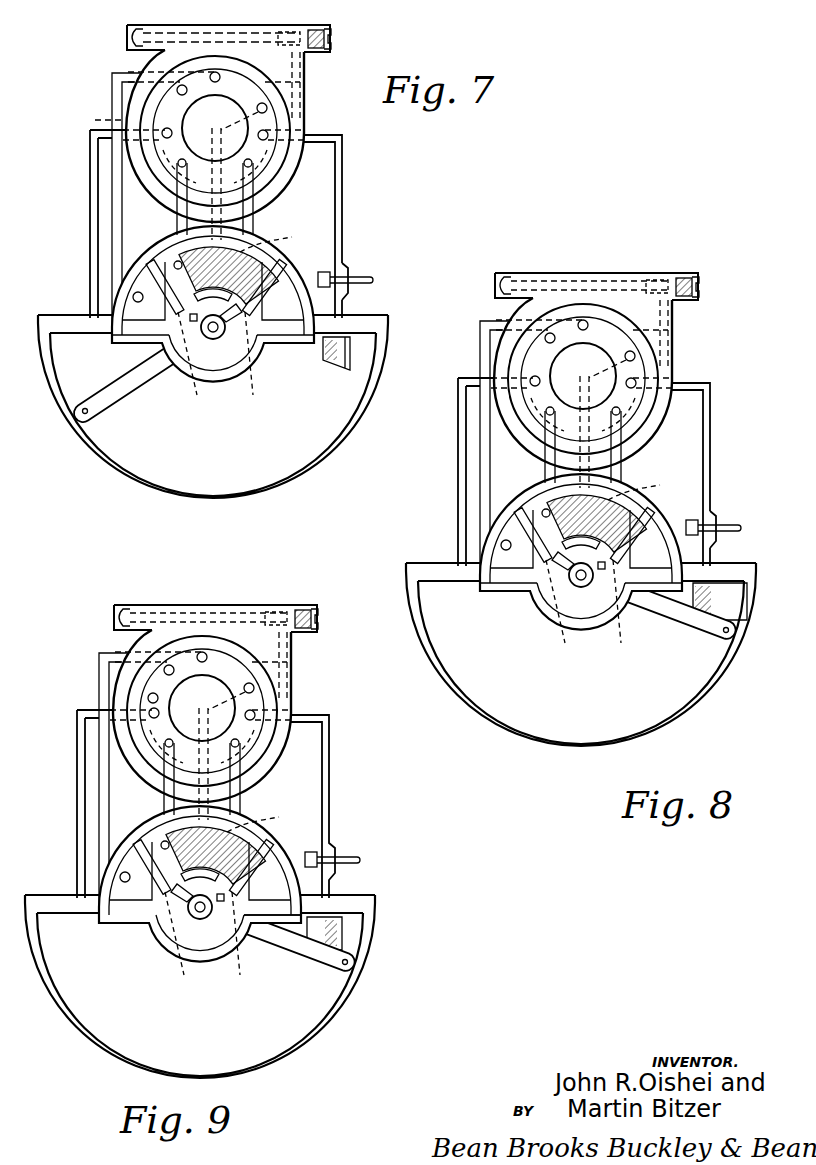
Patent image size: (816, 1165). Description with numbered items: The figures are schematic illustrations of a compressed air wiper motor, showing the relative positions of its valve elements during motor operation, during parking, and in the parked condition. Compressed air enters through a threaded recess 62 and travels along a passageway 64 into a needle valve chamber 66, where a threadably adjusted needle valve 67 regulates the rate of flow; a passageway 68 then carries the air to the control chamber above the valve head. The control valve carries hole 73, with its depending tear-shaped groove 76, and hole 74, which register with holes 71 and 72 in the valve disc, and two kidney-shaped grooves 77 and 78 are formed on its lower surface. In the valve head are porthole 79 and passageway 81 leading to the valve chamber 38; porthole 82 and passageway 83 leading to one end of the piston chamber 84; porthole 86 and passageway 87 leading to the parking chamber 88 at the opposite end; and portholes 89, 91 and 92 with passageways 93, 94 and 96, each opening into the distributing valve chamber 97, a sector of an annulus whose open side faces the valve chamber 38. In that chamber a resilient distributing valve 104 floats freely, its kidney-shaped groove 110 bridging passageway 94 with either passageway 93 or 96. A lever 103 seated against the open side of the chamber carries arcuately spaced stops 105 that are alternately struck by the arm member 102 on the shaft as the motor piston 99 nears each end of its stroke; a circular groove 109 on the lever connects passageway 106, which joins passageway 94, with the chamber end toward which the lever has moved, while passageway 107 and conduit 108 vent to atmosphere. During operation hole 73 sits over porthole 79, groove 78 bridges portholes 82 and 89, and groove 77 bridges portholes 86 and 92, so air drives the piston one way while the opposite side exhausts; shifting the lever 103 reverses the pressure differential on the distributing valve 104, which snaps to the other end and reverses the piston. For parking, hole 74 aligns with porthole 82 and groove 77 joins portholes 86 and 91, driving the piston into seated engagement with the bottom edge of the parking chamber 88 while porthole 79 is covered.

In FIG. 7, the valve chamber 38 is at (130, 308).
In FIG. 8, the valve chamber 38 is at (543, 552).
In FIG. 9, the valve chamber 38 is at (162, 884).
In FIG. 7, the threaded recess 62 is at (130, 40).
In FIG. 8, the threaded recess 62 is at (481, 275).
In FIG. 9, the threaded recess 62 is at (94, 605).
In FIG. 7, the passageway 64 is at (155, 26).
In FIG. 7, the needle valve chamber 66 is at (306, 52).
In FIG. 7, the needle valve 67 is at (333, 46).
In FIG. 7, the passageway 68 is at (304, 88).
In FIG. 8, the passageway 68 is at (699, 334).
In FIG. 7, the hole 71 is at (332, 38).
In FIG. 7, the hole 72 is at (78, 90).
In FIG. 9, the hole 72 is at (93, 701).
In FIG. 7, the hole 73 is at (270, 27).
In FIG. 8, the hole 73 is at (562, 300).
In FIG. 9, the hole 73 is at (157, 651).
In FIG. 7, the hole 74 is at (177, 90).
In FIG. 8, the hole 74 is at (496, 351).
In FIG. 9, the hole 74 is at (97, 704).
In FIG. 8, the tear-shaped groove 76 is at (583, 376).
In FIG. 9, the tear-shaped groove 76 is at (131, 705).
In FIG. 7, the kidney-shaped groove 77 is at (290, 160).
In FIG. 8, the kidney-shaped groove 77 is at (598, 359).
In FIG. 7, the kidney-shaped groove 78 is at (95, 120).
In FIG. 7, the porthole 79 is at (217, 74).
In FIG. 8, the porthole 79 is at (589, 289).
In FIG. 9, the porthole 79 is at (214, 617).
In FIG. 7, the passageway 81 is at (110, 103).
In FIG. 8, the passageway 81 is at (475, 451).
In FIG. 9, the passageway 81 is at (94, 771).
In FIG. 7, the porthole 82 is at (166, 138).
In FIG. 8, the porthole 82 is at (515, 412).
In FIG. 9, the porthole 82 is at (92, 740).
In FIG. 7, the passageway 83 is at (90, 198).
In FIG. 8, the passageway 83 is at (453, 472).
In FIG. 9, the passageway 83 is at (68, 804).
In FIG. 7, the piston chamber 84 is at (65, 367).
In FIG. 8, the piston chamber 84 is at (581, 654).
In FIG. 9, the piston chamber 84 is at (200, 986).
In FIG. 7, the porthole 86 is at (268, 135).
In FIG. 8, the porthole 86 is at (663, 398).
In FIG. 7, the passageway 87 is at (344, 190).
In FIG. 8, the passageway 87 is at (715, 474).
In FIG. 9, the passageway 87 is at (329, 806).
In FIG. 7, the parking chamber 88 is at (352, 360).
In FIG. 8, the parking chamber 88 is at (740, 601).
In FIG. 7, the porthole 89 is at (180, 167).
In FIG. 7, the porthole 91 is at (267, 108).
In FIG. 8, the porthole 91 is at (665, 340).
In FIG. 7, the porthole 92 is at (235, 140).
In FIG. 7, the passageway 93 is at (178, 214).
In FIG. 7, the passageway 94 is at (254, 220).
In FIG. 8, the passageway 94 is at (634, 447).
In FIG. 7, the passageway 96 is at (224, 227).
In FIG. 7, the distributing valve chamber 97 is at (172, 263).
In FIG. 7, the motor piston 99 is at (85, 413).
In FIG. 8, the motor piston 99 is at (682, 614).
In FIG. 9, the motor piston 99 is at (288, 956).
In FIG. 7, the arm member 102 is at (224, 340).
In FIG. 7, the lever 103 is at (162, 338).
In FIG. 8, the lever 103 is at (508, 565).
In FIG. 9, the lever 103 is at (272, 897).
In FIG. 7, the distributing valve 104 is at (270, 258).
In FIG. 7, the stops 105 is at (190, 335).
In FIG. 7, the passageway 106 is at (210, 345).
In FIG. 7, the passageway 107 is at (348, 256).
In FIG. 8, the passageway 107 is at (732, 503).
In FIG. 7, the conduit 108 is at (366, 278).
In FIG. 8, the conduit 108 is at (732, 512).
In FIG. 9, the conduit 108 is at (349, 844).
In FIG. 7, the circular groove 109 is at (246, 306).
In FIG. 7, the kidney-shaped groove 110 is at (295, 237).